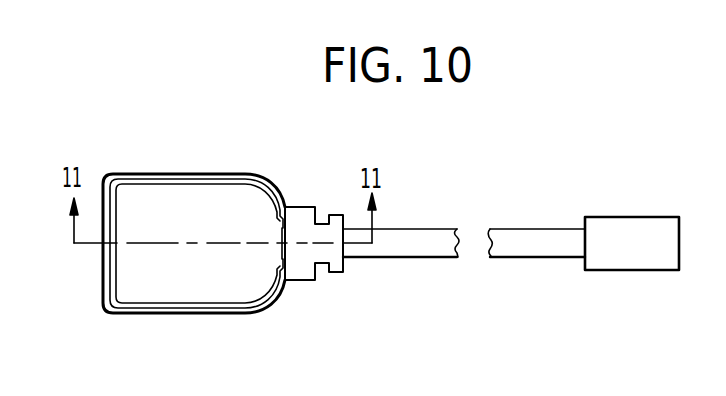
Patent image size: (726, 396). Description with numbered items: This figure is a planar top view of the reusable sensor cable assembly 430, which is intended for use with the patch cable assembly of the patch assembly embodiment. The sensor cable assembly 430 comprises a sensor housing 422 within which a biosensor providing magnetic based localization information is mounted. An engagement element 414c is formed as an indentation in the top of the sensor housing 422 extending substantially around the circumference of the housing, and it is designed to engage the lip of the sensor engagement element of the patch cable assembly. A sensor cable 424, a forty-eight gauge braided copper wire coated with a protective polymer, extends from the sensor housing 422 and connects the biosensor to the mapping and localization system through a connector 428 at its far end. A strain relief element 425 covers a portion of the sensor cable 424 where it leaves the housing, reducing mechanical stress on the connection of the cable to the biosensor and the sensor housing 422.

The reusable sensor cable assembly 430 is at (209, 220).
The engagement element 414c is at (117, 313).
The sensor housing 422 is at (248, 277).
The strain relief element 425 is at (335, 272).
The sensor cable 424 is at (518, 259).
The connector 428 is at (644, 227).